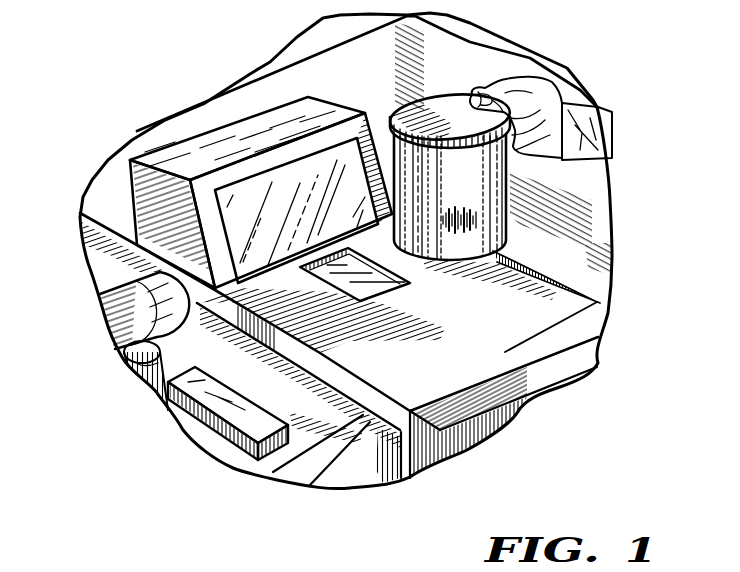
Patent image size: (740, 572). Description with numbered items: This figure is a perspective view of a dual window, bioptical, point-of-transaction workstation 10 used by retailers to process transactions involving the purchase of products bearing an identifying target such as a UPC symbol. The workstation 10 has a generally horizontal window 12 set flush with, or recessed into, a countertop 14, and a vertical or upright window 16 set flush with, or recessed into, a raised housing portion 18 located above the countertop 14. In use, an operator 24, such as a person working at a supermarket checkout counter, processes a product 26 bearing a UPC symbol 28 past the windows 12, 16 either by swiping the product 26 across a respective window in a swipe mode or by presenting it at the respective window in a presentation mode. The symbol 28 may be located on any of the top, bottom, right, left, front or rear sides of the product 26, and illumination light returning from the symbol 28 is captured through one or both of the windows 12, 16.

The point-of-transaction workstation 10 is at (598, 323).
The horizontal window 12 is at (388, 268).
The countertop 14 is at (497, 335).
The vertical window 16 is at (287, 187).
The raised housing portion 18 is at (145, 210).
The operator 24 is at (590, 132).
The product 26 is at (448, 110).
The UPC symbol 28 is at (477, 224).